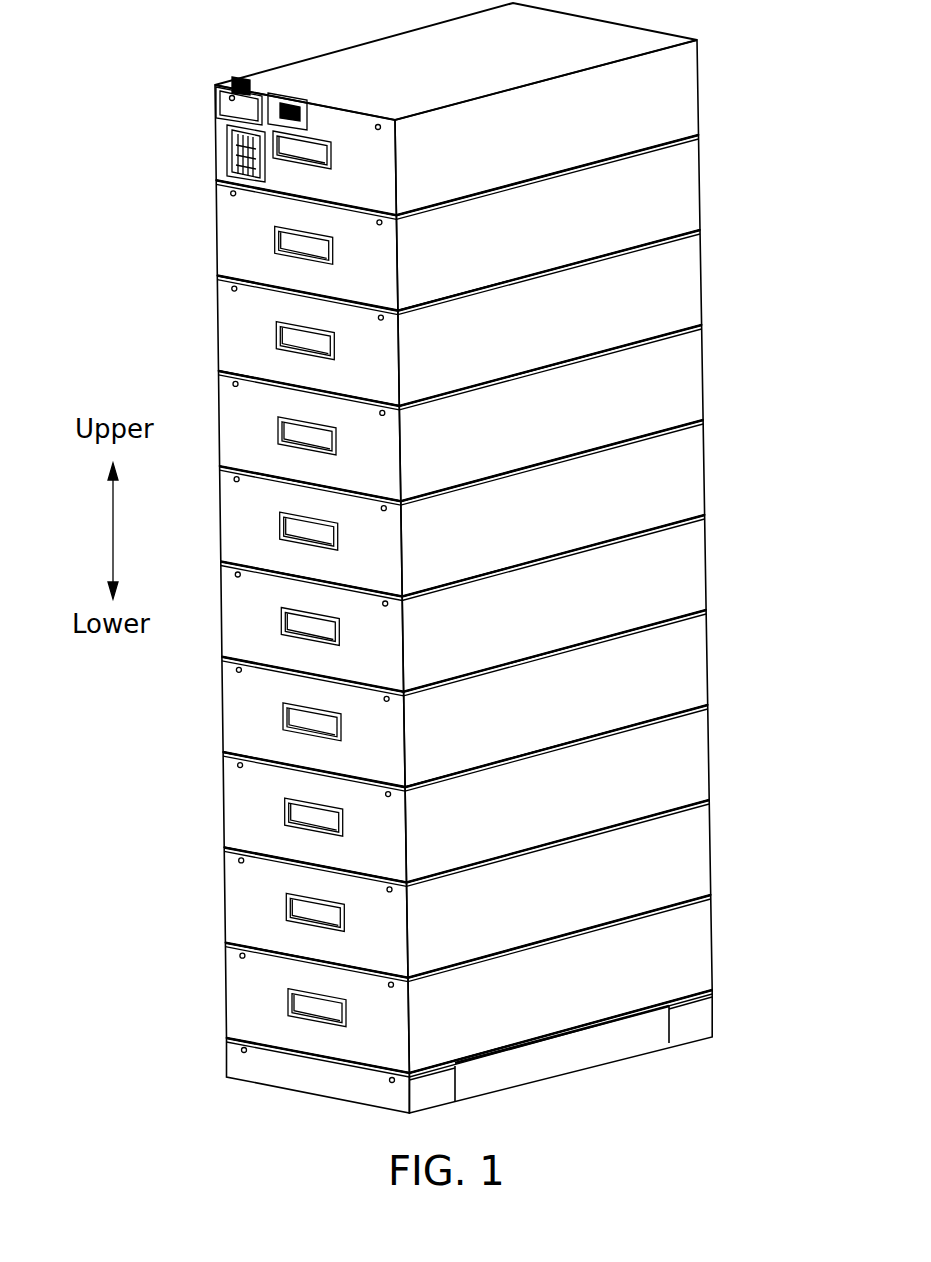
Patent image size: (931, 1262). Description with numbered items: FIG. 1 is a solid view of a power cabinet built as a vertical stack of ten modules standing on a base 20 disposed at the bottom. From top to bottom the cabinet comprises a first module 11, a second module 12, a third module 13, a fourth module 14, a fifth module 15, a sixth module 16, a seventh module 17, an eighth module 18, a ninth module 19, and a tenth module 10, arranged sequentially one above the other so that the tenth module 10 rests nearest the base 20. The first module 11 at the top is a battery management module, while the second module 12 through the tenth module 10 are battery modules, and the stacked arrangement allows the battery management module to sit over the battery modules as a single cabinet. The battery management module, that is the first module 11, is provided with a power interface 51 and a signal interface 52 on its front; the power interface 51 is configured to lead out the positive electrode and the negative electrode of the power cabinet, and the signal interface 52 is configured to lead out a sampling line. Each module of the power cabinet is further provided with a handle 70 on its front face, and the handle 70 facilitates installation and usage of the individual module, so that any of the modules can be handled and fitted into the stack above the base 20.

The tenth module 10 is at (515, 972).
The first module 11 is at (508, 111).
The second module 12 is at (506, 206).
The third module 13 is at (431, 303).
The fourth module 14 is at (509, 400).
The fifth module 15 is at (508, 498).
The sixth module 16 is at (513, 591).
The seventh module 17 is at (511, 682).
The eighth module 18 is at (514, 779).
The ninth module 19 is at (514, 879).
The base 20 is at (519, 1030).
The power interface 51 is at (202, 137).
The signal interface 52 is at (195, 71).
The handle 70 is at (199, 290).